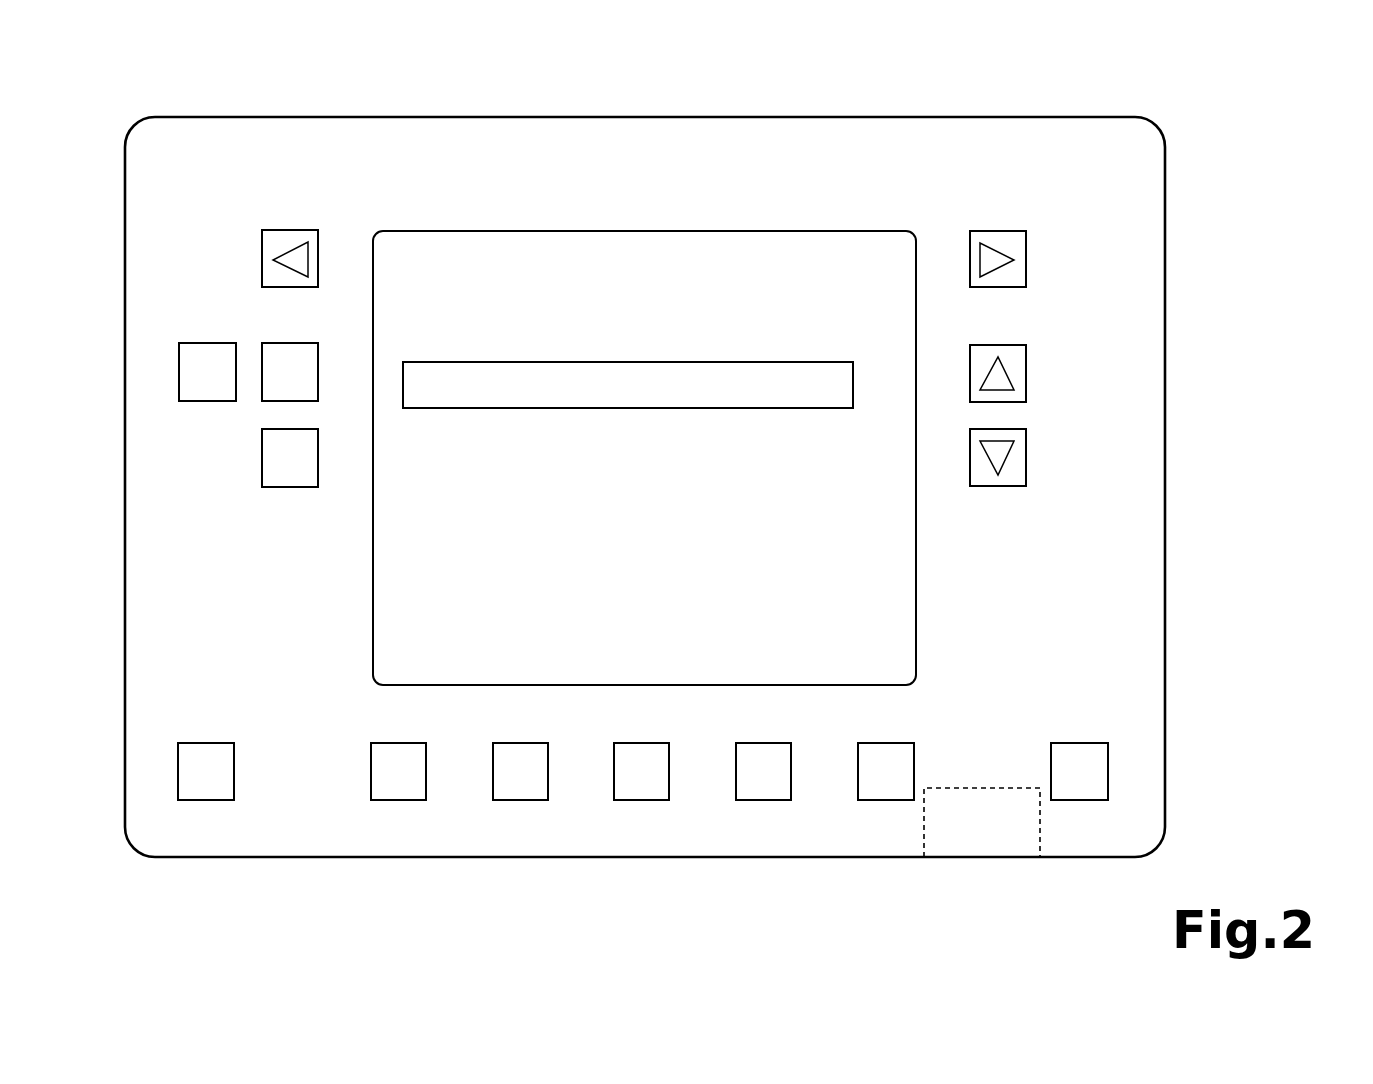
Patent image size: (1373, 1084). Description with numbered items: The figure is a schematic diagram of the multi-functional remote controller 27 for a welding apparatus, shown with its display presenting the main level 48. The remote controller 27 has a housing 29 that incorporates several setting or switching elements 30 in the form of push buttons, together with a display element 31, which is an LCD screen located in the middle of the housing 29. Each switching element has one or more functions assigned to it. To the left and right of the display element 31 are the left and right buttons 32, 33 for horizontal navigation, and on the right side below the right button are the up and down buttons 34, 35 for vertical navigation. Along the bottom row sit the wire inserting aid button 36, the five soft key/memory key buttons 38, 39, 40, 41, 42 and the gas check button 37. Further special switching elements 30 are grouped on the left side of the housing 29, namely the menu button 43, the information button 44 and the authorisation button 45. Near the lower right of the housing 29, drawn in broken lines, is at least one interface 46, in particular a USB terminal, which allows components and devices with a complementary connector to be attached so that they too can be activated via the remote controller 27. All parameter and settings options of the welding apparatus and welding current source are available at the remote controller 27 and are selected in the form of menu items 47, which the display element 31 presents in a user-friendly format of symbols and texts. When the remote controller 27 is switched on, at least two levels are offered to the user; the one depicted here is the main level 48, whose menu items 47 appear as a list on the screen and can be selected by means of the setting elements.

The multi-functional remote controller 27 is at (1238, 119).
The housing 29 is at (954, 153).
The switching elements 30 is at (229, 212).
The display element 31 is at (696, 258).
The left button 32 is at (275, 243).
The right button 33 is at (1010, 244).
The up button 34 is at (1010, 362).
The down button 35 is at (1015, 468).
The wire inserting aid button 36 is at (218, 755).
The gas check button 37 is at (1061, 756).
The soft key/memory key button 38 is at (400, 800).
The soft key/memory key button 39 is at (520, 800).
The soft key/memory key button 40 is at (643, 800).
The soft key/memory key button 41 is at (763, 800).
The soft key/memory key button 42 is at (885, 800).
The menu button 43 is at (276, 365).
The information button 44 is at (276, 461).
The authorisation button 45 is at (186, 377).
The interface 46 is at (970, 830).
The menu items 47 is at (541, 288).
The main level 48 is at (868, 628).